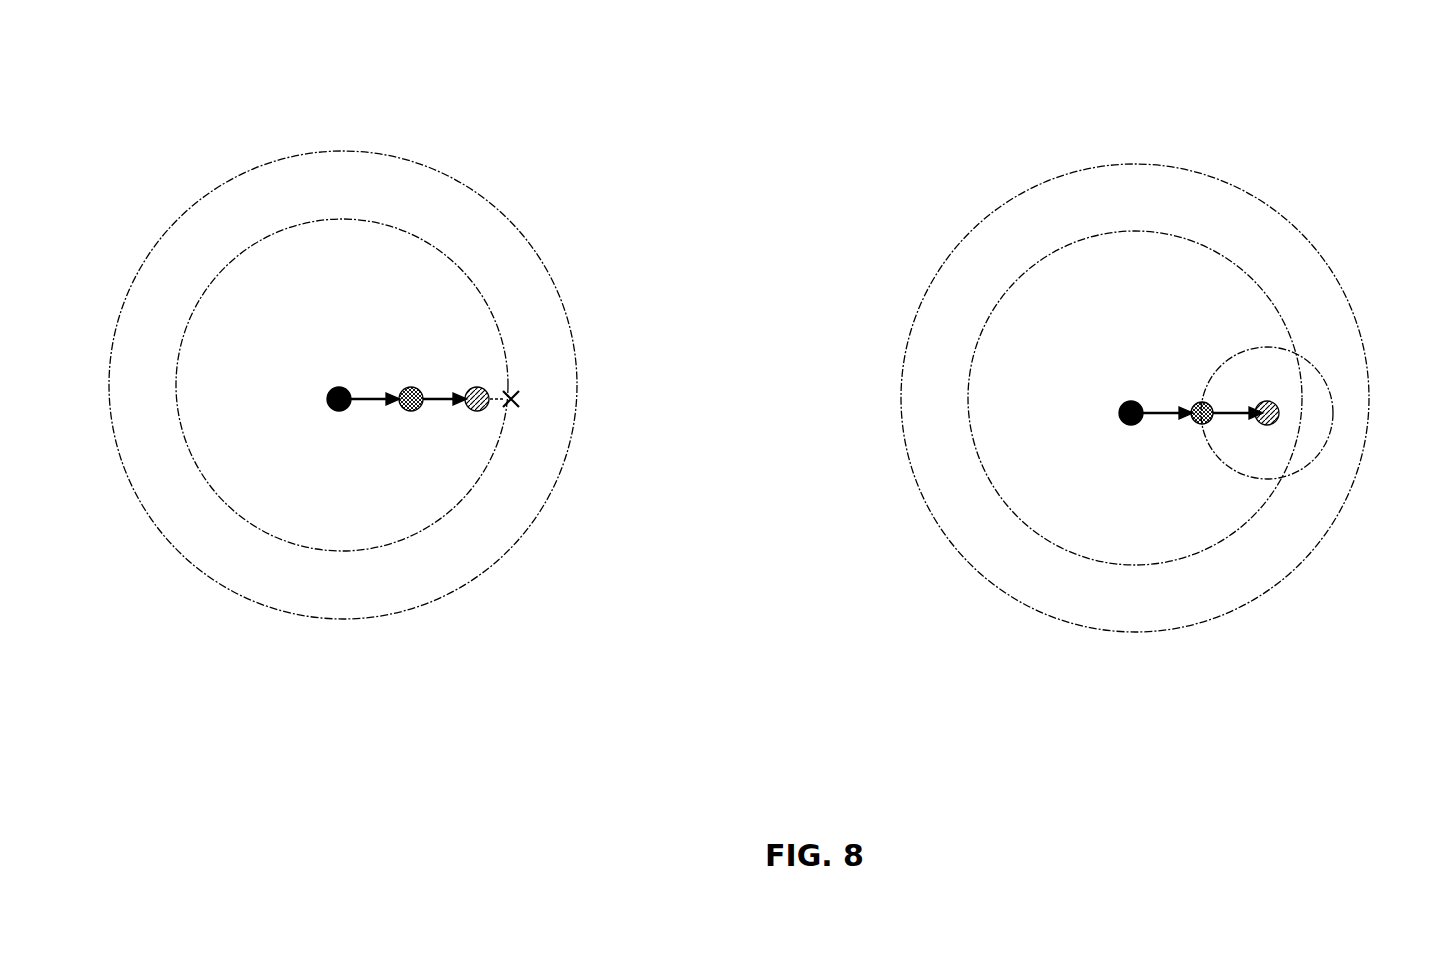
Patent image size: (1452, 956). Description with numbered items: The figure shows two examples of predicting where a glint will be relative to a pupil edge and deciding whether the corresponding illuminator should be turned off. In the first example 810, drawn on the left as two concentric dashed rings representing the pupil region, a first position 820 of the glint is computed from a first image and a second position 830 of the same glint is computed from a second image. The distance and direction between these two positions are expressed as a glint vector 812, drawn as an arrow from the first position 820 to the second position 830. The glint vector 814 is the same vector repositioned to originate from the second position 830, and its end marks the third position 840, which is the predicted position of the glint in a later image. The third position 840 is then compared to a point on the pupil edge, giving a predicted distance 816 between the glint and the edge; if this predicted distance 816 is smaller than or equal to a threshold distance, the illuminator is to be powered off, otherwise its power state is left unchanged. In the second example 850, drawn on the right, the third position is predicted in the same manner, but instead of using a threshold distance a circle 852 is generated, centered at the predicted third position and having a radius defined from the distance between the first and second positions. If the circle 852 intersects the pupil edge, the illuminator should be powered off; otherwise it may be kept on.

The first example 810 is at (408, 112).
The glint vector 812 is at (373, 397).
The glint vector 814 is at (437, 400).
The predicted distance 816 is at (497, 390).
The first position 820 is at (332, 392).
The second position 830 is at (408, 413).
The third position 840 is at (470, 388).
The second example 850 is at (1206, 132).
The circle 852 is at (1313, 367).